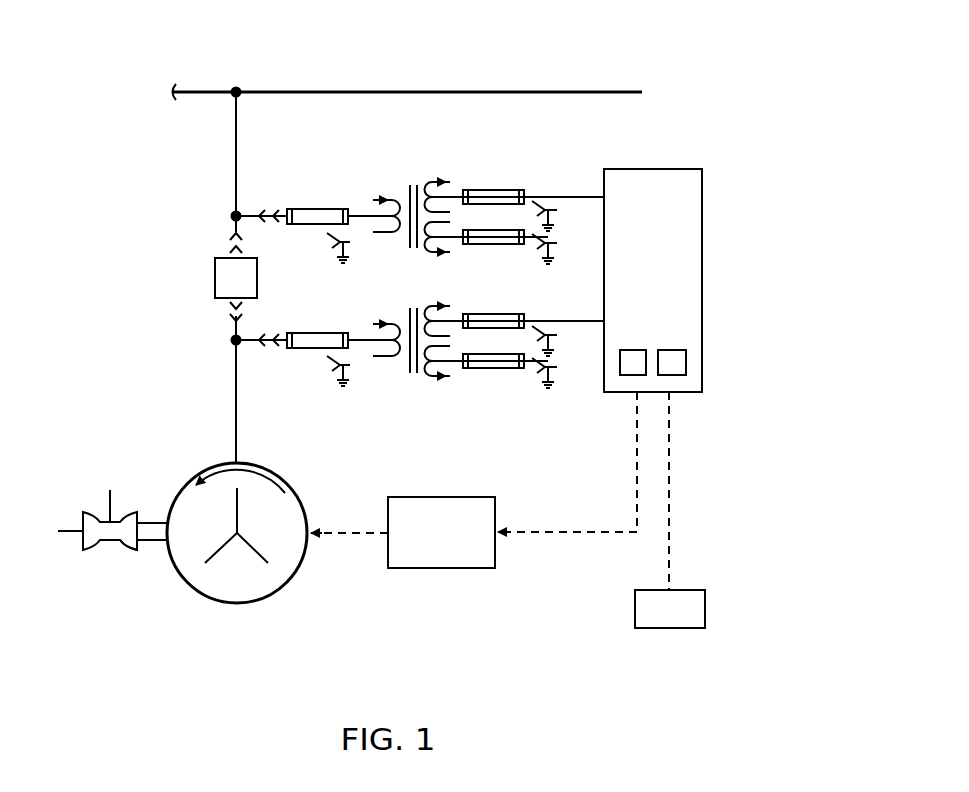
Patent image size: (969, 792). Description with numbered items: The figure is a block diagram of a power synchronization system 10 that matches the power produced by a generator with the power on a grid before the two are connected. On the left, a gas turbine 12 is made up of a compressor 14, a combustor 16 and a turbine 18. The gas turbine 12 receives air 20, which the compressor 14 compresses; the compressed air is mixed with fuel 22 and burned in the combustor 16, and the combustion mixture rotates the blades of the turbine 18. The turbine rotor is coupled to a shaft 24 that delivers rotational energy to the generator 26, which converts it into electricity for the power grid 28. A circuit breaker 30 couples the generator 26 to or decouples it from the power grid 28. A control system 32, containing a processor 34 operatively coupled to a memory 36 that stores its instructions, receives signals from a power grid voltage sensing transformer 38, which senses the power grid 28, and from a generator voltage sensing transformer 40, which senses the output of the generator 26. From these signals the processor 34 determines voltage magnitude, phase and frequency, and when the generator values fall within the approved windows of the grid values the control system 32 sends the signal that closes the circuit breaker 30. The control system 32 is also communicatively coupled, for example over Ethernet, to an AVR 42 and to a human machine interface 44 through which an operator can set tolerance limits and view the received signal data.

The power synchronization system 10 is at (626, 38).
The gas turbine 12 is at (107, 545).
The compressor 14 is at (95, 512).
The combustor 16 is at (110, 550).
The turbine 18 is at (128, 551).
The air 20 is at (77, 532).
The fuel 22 is at (110, 490).
The shaft 24 is at (152, 522).
The generator 26 is at (286, 585).
The power grid 28 is at (410, 92).
The circuit breaker 30 is at (215, 276).
The control system 32 is at (659, 280).
The processor 34 is at (620, 363).
The memory 36 is at (686, 357).
The power grid voltage sensing transformer 38 is at (429, 183).
The generator voltage sensing transformer 40 is at (412, 374).
The AVR 42 is at (440, 569).
The human machine interface 44 is at (670, 629).